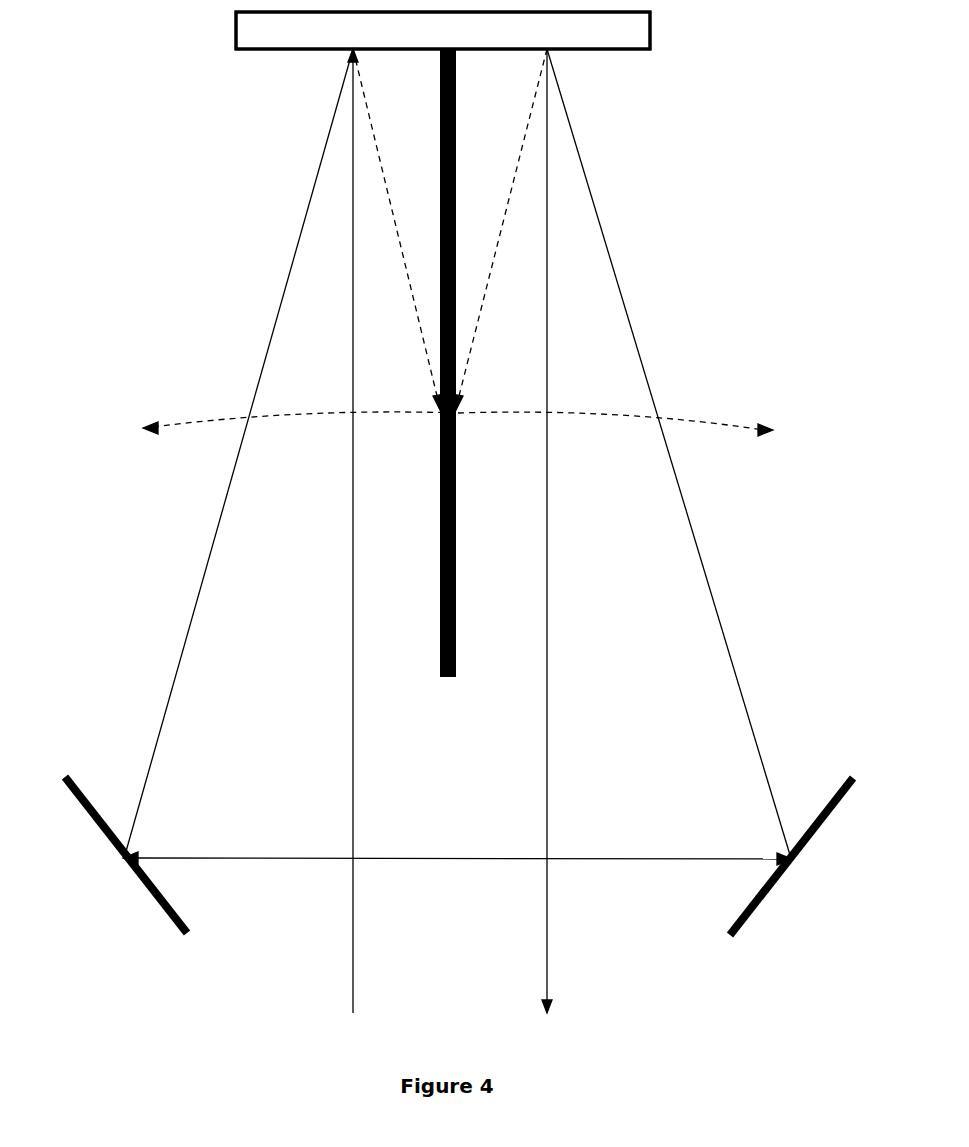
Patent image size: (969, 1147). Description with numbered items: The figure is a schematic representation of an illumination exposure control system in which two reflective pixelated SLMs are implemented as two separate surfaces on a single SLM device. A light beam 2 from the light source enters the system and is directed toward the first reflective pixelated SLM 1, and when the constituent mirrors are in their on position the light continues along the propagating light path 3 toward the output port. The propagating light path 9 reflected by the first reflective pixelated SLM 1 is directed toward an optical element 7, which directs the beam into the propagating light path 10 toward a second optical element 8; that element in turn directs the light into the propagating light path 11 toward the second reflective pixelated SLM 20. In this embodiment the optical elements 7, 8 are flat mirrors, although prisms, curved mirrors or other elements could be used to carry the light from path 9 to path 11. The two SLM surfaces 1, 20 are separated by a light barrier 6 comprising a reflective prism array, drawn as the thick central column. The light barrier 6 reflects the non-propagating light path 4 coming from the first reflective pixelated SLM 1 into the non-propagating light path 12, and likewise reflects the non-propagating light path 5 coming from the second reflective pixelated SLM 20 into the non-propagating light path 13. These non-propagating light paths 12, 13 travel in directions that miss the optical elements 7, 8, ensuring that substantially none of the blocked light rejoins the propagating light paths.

The first reflective pixelated SLM 1 is at (267, 50).
The light beam 2 is at (353, 912).
The propagating light path 3 is at (547, 913).
The non-propagating light path 4 is at (405, 273).
The non-propagating light path 5 is at (493, 273).
The light barrier 6 is at (443, 680).
The optical element 7 is at (143, 880).
The optical element 8 is at (760, 903).
The propagating light path 9 is at (178, 653).
The propagating light path 10 is at (563, 860).
The propagating light path 11 is at (703, 570).
The non-propagating light path 12 is at (185, 425).
The non-propagating light path 13 is at (703, 430).
The second reflective pixelated SLM 20 is at (632, 50).